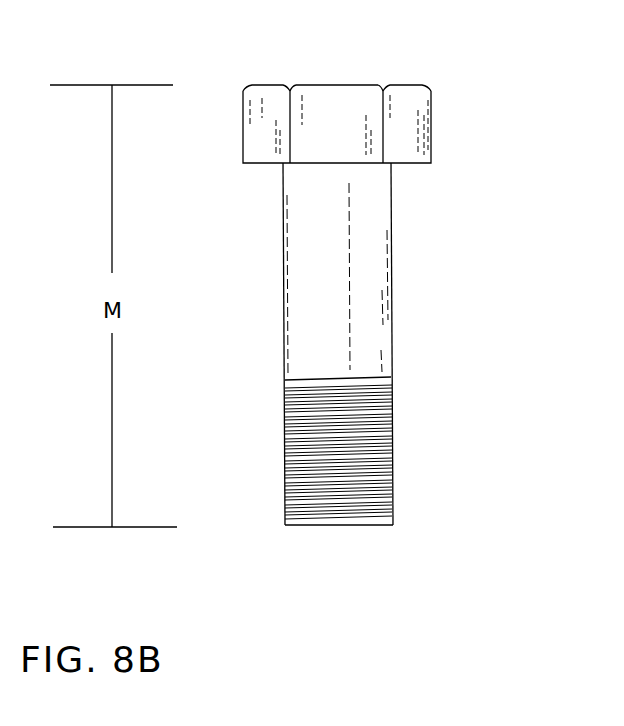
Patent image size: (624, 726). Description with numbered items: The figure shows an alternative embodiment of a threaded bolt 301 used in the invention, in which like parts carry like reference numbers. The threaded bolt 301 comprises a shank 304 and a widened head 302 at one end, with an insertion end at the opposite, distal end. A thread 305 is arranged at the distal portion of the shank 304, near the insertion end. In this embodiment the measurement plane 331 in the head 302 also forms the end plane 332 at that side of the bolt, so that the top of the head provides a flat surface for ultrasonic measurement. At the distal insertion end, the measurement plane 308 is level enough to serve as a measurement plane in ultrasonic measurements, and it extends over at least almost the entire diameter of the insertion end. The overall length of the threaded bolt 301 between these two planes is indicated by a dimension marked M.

The threaded bolt 301 is at (413, 408).
The head 302 is at (412, 155).
The shank 304 is at (377, 340).
The thread 305 is at (392, 484).
The measurement plane 308 is at (332, 526).
The measurement plane 331 is at (340, 83).
The end plane 332 is at (289, 86).